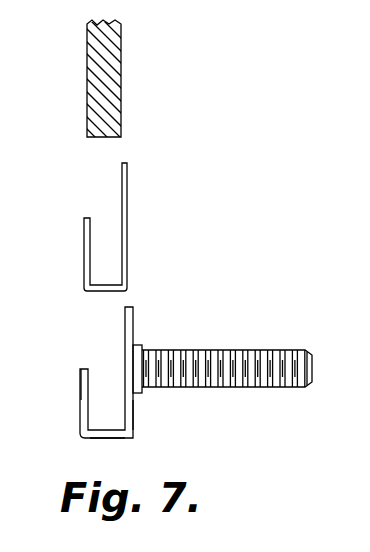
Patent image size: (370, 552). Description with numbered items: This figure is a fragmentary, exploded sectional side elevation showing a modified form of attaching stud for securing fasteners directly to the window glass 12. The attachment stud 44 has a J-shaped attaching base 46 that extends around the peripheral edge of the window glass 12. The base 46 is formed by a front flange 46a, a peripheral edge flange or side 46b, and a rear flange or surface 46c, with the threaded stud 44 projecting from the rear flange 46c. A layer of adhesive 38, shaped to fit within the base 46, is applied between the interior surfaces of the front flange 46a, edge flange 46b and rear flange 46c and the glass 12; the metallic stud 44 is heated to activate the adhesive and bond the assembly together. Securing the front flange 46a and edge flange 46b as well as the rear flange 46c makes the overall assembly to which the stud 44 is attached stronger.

The window glass 12 is at (112, 52).
The layer of adhesive 38 is at (128, 197).
The attachment stud 44 is at (268, 344).
The J-shaped attaching base 46 is at (135, 316).
The front flange 46a is at (80, 380).
The peripheral edge flange 46b is at (108, 439).
The rear flange 46c is at (134, 414).